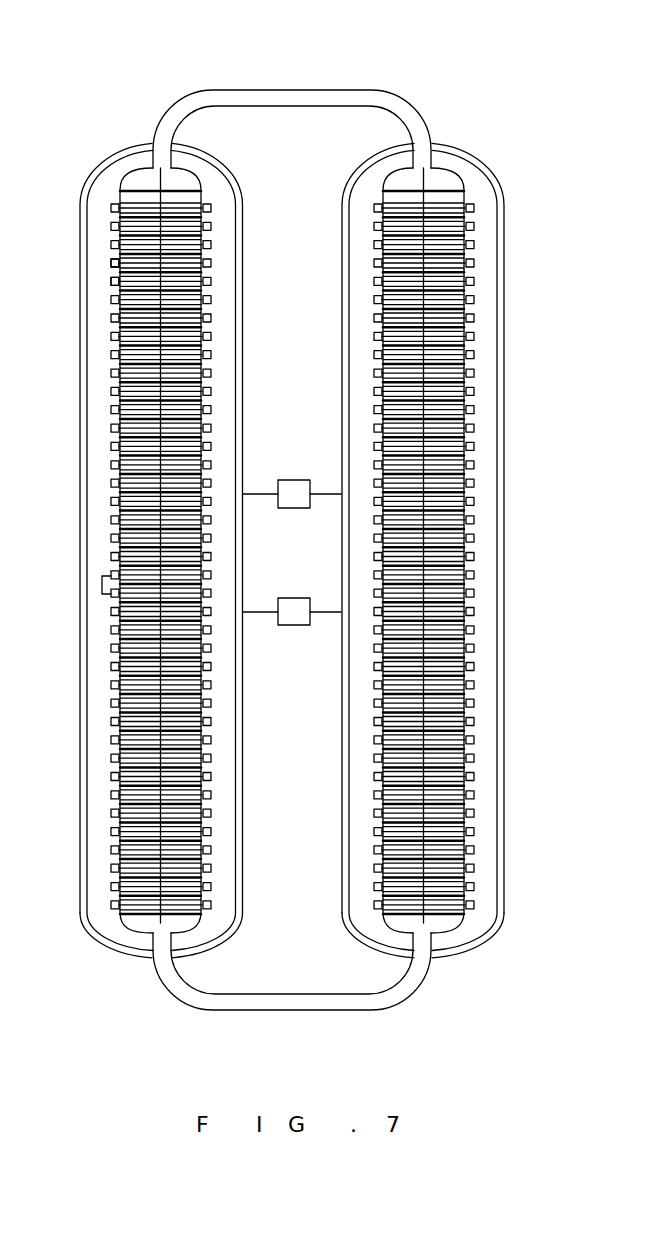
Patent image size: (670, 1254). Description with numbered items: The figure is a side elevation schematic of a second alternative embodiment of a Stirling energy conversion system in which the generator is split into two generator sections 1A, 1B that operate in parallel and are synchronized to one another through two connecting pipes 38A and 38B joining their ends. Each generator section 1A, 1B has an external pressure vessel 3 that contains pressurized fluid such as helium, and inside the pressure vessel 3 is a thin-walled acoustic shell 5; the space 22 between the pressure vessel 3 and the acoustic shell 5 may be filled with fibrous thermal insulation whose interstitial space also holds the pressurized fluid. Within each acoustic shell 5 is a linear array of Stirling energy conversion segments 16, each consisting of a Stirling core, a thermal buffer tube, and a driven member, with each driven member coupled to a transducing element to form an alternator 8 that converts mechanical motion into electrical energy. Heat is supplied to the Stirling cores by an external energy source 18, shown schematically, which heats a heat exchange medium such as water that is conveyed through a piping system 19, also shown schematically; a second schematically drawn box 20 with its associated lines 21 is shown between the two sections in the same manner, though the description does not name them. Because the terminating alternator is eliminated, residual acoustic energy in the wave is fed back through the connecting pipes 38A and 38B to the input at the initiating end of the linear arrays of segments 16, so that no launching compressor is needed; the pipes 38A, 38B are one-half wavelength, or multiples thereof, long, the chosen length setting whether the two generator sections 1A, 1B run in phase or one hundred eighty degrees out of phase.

The generator section 1A is at (60, 412).
The generator section 1B is at (525, 411).
The pressure vessel 3 is at (127, 143).
The acoustic shell 5 is at (127, 178).
The alternator 8 is at (108, 281).
The Stirling energy conversion segment 16 is at (100, 583).
The energy source 18 is at (285, 478).
The piping system 19 is at (262, 497).
The junction box 20 is at (285, 597).
The electrical leads 21 is at (262, 613).
The space 22 is at (360, 324).
The connecting pipe 38A is at (286, 90).
The connecting pipe 38B is at (275, 1012).